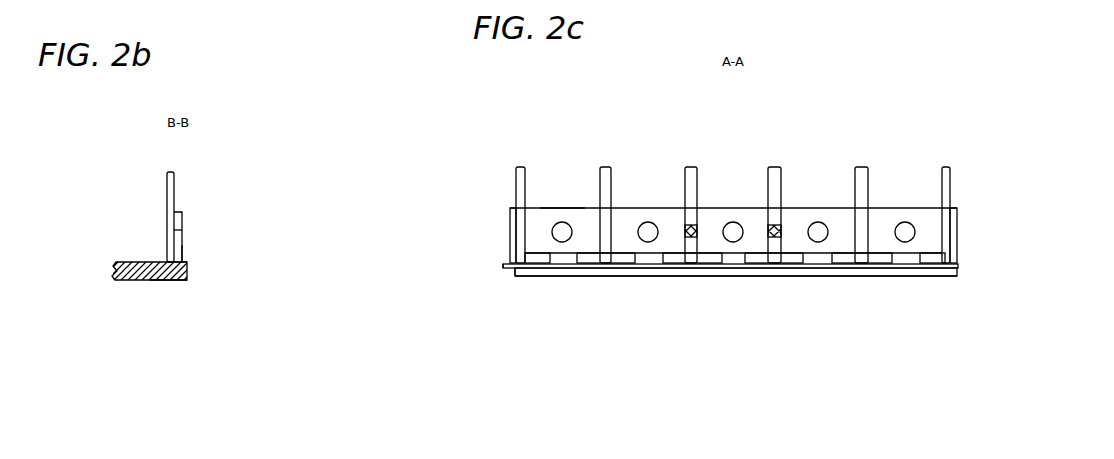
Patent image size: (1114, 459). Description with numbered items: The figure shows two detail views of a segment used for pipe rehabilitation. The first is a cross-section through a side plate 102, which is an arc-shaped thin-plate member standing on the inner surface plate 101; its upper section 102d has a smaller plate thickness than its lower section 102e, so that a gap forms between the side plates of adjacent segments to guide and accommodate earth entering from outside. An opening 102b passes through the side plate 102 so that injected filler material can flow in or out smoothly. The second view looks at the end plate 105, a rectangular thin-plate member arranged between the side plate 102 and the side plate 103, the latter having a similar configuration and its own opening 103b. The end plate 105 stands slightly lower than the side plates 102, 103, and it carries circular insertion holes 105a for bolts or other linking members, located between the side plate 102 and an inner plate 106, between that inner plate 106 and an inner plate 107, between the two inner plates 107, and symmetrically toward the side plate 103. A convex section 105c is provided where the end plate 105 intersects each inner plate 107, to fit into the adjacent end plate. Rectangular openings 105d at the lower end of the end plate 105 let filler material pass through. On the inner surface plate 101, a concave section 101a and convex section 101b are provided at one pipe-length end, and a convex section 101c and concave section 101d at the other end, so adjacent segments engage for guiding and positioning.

In FIG. 2b, the inner surface plate 101 is at (127, 262).
In FIG. 2c, the inner surface plate 101 is at (718, 278).
In FIG. 2b, the concave section 101a is at (192, 263).
In FIG. 2c, the concave section 101a is at (958, 267).
In FIG. 2b, the convex section 101b is at (193, 278).
In FIG. 2c, the convex section 101b is at (957, 279).
In FIG. 2c, the convex section 101c is at (503, 266).
In FIG. 2c, the concave section 101d is at (511, 276).
In FIG. 2b, the side plate 102 is at (176, 173).
In FIG. 2c, the side plate 102 is at (522, 167).
In FIG. 2b, the opening 102b is at (183, 227).
In FIG. 2c, the opening 102b is at (514, 238).
In FIG. 2b, the upper section 102d is at (177, 201).
In FIG. 2b, the lower section 102e is at (187, 248).
In FIG. 2c, the side plate 103 is at (946, 168).
In FIG. 2c, the opening 103b is at (949, 232).
In FIG. 2c, the end plate 105 is at (731, 207).
In FIG. 2c, the insertion hole 105a is at (562, 221).
In FIG. 2c, the convex section 105c is at (684, 230).
In FIG. 2c, the rectangular opening 105d is at (548, 276).
In FIG. 2c, the inner plate 106 is at (605, 168).
In FIG. 2c, the inner plate 107 is at (691, 167).